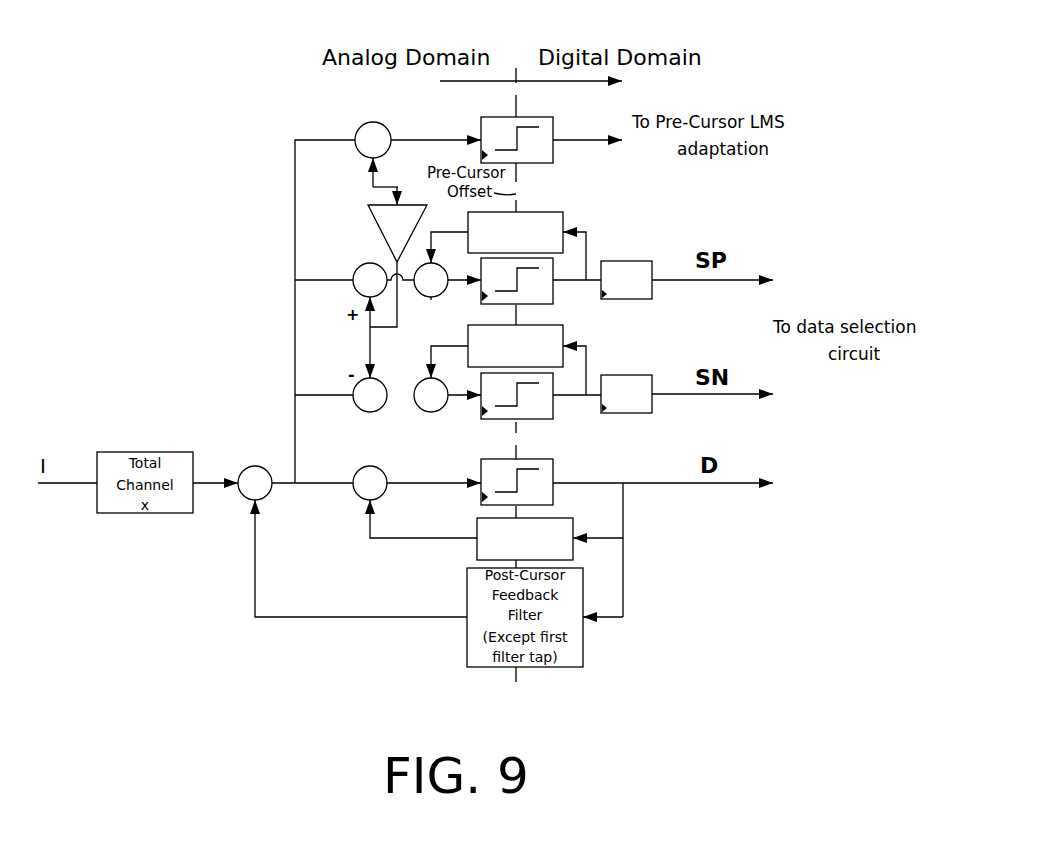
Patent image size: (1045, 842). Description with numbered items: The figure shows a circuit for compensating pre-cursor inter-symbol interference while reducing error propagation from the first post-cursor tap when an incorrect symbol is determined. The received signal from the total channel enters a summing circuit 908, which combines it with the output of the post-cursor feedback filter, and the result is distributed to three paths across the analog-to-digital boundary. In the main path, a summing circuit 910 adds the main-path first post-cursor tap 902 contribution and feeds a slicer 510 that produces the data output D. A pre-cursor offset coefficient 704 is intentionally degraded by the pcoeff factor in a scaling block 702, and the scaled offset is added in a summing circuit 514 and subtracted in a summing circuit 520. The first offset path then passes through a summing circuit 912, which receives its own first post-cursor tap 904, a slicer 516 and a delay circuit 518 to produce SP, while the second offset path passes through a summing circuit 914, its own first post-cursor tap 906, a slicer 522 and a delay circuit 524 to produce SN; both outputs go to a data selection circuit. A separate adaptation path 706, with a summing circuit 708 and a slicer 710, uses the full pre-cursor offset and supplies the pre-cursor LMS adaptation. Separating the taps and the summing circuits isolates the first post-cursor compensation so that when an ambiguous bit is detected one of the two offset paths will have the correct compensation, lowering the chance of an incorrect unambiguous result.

The slicer 510 is at (553, 467).
The summing circuit 514 is at (353, 288).
The slicer 516 is at (481, 290).
The delay circuit 518 is at (628, 263).
The summing circuit 520 is at (353, 408).
The slicer 522 is at (530, 421).
The delay circuit 524 is at (623, 380).
The scaling block 702 is at (381, 232).
The pre-cursor offset coefficient 704 is at (517, 194).
The adaptation path 706 is at (551, 88).
The summing circuit 708 is at (386, 128).
The slicer 710 is at (543, 147).
The first post-cursor tap 902 is at (567, 518).
The first post-cursor tap 904 is at (563, 214).
The first post-cursor tap 906 is at (563, 331).
The summing circuit 908 is at (266, 497).
The summing circuit 910 is at (358, 498).
The summing circuit 912 is at (422, 296).
The summing circuit 914 is at (419, 414).